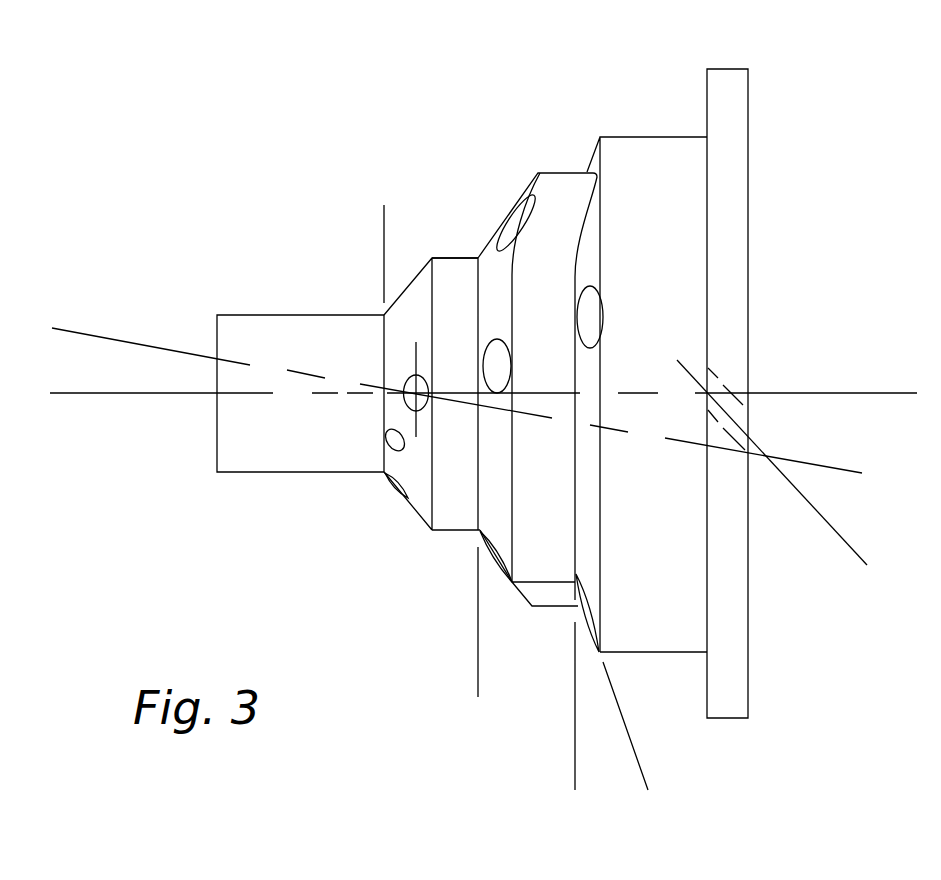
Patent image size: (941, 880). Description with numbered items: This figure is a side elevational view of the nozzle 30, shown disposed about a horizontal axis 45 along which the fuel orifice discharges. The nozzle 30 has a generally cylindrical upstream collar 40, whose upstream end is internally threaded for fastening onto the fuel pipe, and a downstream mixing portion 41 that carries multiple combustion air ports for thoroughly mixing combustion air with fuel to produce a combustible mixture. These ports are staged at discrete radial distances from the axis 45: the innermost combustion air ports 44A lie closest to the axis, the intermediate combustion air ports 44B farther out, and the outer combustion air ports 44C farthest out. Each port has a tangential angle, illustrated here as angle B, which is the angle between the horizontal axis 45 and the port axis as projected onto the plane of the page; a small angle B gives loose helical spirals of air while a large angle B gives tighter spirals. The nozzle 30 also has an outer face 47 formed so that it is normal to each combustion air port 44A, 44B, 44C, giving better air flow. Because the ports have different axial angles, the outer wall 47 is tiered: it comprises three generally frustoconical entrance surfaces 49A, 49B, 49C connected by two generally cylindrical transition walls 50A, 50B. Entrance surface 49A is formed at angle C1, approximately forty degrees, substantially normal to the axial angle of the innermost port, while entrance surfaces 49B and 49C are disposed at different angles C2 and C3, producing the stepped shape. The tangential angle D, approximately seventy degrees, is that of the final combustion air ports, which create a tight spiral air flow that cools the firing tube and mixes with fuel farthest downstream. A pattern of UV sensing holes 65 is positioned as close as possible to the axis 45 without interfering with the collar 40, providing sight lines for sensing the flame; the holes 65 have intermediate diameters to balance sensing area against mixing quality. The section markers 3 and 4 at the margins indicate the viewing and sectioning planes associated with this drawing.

The nozzle 30 is at (404, 158).
The upstream collar 40 is at (294, 338).
The mixing portion 41 is at (547, 171).
The innermost combustion air ports 44A is at (416, 375).
The intermediate combustion air ports 44B is at (497, 350).
The outer combustion air ports 44C is at (590, 318).
The horizontal axis 45 is at (832, 395).
The outer face 47 is at (498, 520).
The first entrance surface 49A is at (407, 498).
The second entrance surface 49B is at (482, 536).
The third entrance surface 49C is at (597, 628).
The first transition wall 50A is at (455, 257).
The second transition wall 50B is at (569, 173).
The UV sensing holes 65 is at (395, 439).
The tangential angle B is at (101, 480).
The angle C1 is at (382, 247).
The angle C2 is at (518, 594).
The angle C3 is at (639, 768).
The tangential angle D is at (845, 535).
The section line 3- 3 is at (938, 810).
The section line 4- 4 is at (30, 807).